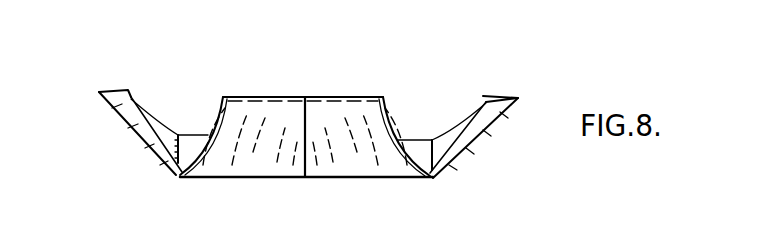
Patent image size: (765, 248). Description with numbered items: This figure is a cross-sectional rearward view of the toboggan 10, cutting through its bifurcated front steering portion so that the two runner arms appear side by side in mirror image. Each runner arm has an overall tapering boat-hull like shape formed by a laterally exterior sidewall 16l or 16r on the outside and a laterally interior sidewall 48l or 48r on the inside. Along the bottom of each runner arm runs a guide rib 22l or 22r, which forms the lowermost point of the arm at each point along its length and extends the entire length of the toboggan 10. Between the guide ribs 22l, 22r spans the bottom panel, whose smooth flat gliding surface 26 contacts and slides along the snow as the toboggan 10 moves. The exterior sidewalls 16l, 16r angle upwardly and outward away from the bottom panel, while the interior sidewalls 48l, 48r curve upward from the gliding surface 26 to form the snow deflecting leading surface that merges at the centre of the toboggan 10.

The toboggan 10 is at (213, 76).
The right exterior sidewall 16r is at (117, 102).
The left exterior sidewall 16l is at (500, 117).
The right guide rib 22r is at (180, 180).
The left guide rib 22l is at (436, 180).
The gliding surface 26 is at (333, 179).
The right interior sidewall 48r is at (268, 96).
The left interior sidewall 48l is at (339, 95).